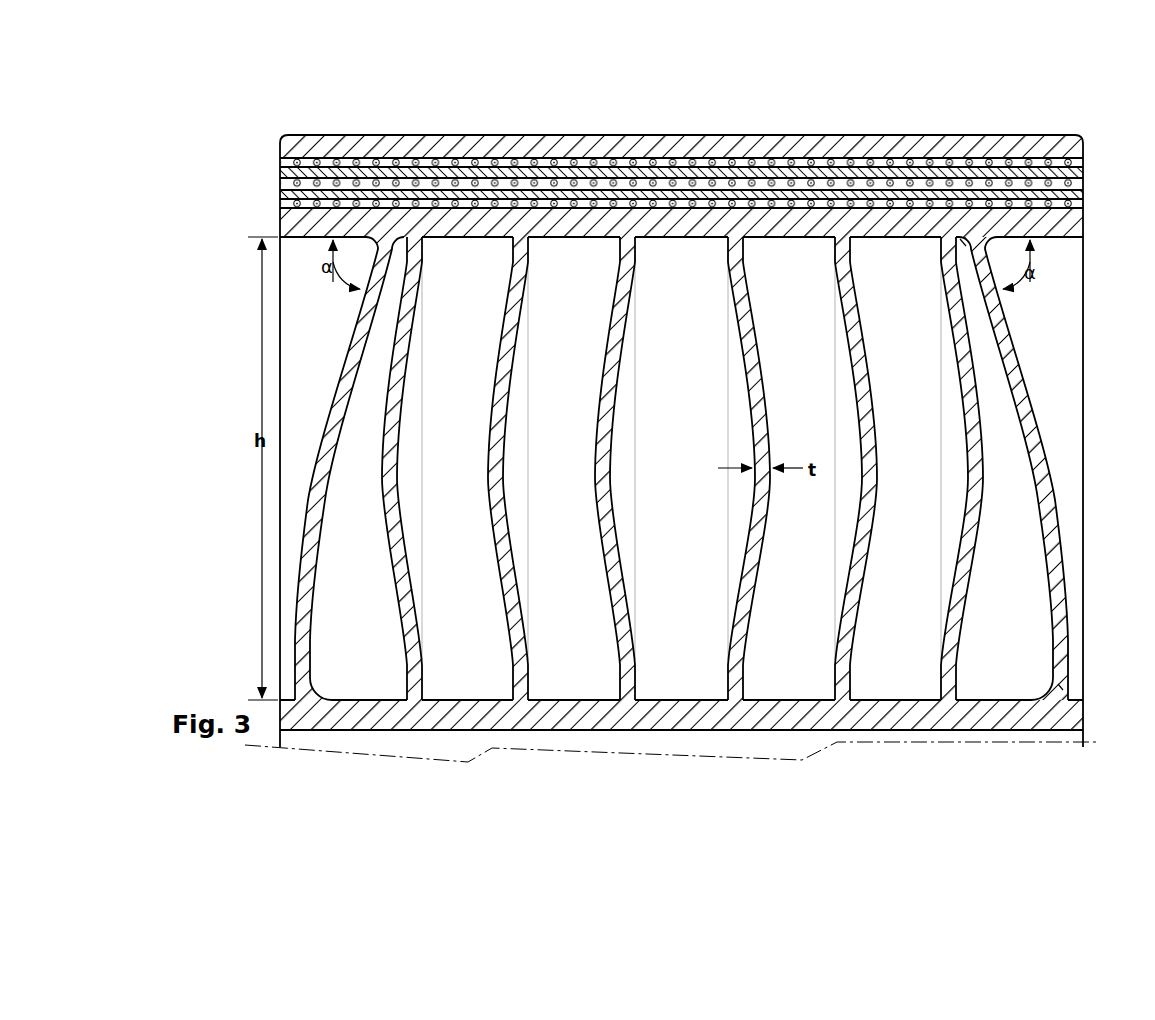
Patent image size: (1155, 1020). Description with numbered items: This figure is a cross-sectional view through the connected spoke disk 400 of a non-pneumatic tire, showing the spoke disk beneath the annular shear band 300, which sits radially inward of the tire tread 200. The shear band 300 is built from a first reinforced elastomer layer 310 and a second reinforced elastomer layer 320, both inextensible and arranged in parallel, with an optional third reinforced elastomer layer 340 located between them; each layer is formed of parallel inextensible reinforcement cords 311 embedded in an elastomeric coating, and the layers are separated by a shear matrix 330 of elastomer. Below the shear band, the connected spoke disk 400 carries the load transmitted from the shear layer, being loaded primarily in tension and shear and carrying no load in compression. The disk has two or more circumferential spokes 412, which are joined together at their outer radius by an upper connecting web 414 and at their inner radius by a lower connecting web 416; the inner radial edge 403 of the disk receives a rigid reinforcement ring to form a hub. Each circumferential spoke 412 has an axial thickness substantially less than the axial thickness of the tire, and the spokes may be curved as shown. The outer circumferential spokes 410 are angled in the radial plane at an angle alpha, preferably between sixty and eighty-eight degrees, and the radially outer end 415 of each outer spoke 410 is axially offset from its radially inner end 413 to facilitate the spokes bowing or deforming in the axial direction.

The tire tread 200 is at (714, 127).
The shear band 300 is at (262, 163).
The first reinforced elastomer layer 310 is at (280, 157).
The reinforcement cords 311 is at (611, 160).
The second reinforced elastomer layer 320 is at (280, 204).
The shear matrix 330 is at (1086, 164).
The third reinforced elastomer layer 340 is at (1086, 184).
The connected spoke disk 400 is at (1088, 513).
The inner radial edge 403 is at (622, 730).
The outer circumferential spoke 410 is at (341, 368).
The circumferential spoke 412 is at (772, 445).
The radially inner end 413 is at (1065, 679).
The upper connecting web 414 is at (692, 228).
The radially outer end 415 is at (985, 268).
The lower connecting web 416 is at (681, 712).